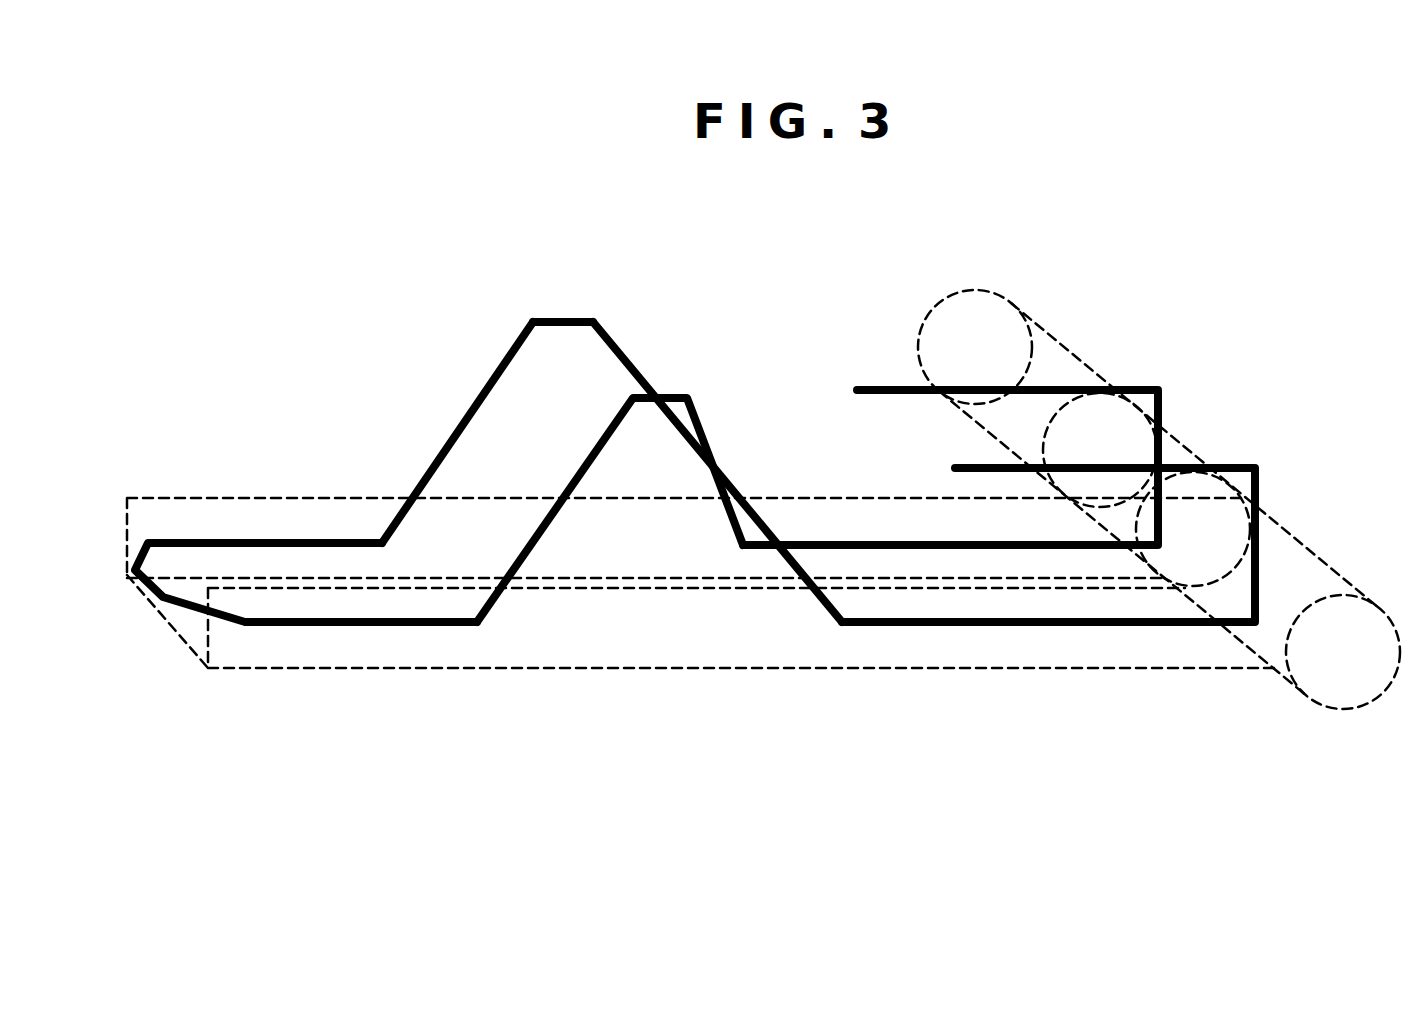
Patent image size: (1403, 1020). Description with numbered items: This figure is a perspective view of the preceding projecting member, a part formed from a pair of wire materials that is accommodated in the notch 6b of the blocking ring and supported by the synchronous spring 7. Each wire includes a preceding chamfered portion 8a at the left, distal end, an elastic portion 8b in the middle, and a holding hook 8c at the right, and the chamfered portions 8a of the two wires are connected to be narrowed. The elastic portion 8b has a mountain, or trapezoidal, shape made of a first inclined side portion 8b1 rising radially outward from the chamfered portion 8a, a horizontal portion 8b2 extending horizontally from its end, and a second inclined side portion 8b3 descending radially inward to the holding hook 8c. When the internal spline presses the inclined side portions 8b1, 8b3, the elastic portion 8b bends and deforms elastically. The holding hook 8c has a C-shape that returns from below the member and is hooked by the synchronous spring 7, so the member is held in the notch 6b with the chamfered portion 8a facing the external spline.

The notch 6b is at (245, 670).
The synchronous spring 7 is at (1317, 557).
The preceding chamfered portion 8a is at (320, 543).
The elastic portion 8b is at (612, 393).
The first inclined side portion 8b1 is at (507, 350).
The horizontal portion 8b2 is at (563, 322).
The second inclined side portion 8b3 is at (717, 436).
The holding hook 8c is at (888, 390).